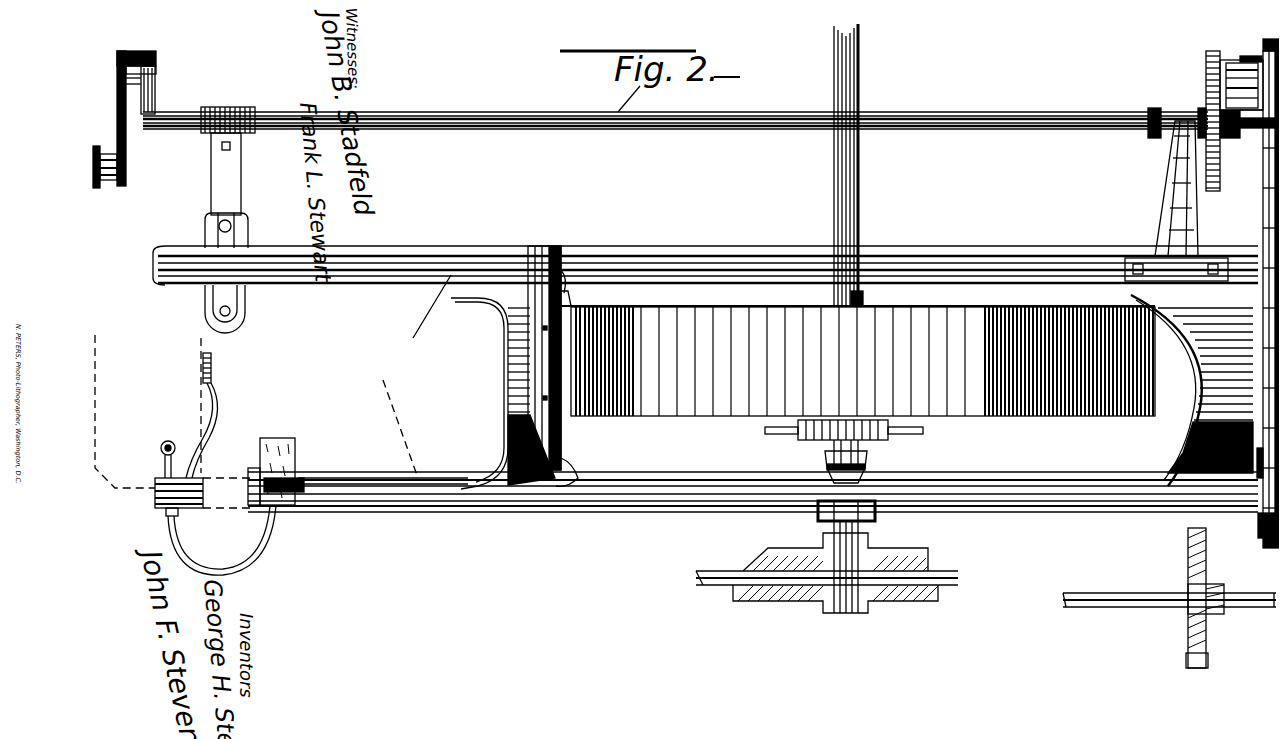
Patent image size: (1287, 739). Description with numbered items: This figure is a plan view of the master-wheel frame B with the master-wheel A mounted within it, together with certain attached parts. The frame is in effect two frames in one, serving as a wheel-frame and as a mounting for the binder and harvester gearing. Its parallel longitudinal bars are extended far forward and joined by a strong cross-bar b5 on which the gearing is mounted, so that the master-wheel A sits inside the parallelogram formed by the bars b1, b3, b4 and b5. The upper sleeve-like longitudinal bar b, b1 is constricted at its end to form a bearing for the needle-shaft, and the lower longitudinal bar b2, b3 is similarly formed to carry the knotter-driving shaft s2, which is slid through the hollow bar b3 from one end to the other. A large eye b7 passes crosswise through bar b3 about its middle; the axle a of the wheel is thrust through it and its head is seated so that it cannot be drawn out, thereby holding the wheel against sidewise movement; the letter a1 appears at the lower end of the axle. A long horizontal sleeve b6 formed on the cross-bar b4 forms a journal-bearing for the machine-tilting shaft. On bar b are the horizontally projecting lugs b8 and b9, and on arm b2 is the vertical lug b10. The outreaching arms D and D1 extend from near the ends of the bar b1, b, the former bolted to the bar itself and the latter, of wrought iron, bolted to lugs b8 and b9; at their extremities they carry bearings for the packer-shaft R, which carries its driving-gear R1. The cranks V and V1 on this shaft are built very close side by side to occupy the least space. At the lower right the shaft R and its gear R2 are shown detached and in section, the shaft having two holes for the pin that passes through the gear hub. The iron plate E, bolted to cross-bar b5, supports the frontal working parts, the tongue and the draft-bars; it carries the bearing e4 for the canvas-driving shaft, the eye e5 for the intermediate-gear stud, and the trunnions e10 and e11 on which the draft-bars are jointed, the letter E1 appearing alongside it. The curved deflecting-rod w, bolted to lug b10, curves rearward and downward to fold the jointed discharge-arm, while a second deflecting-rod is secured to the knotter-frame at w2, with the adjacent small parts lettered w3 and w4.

The packer-shaft R is at (709, 349).
The driving-gear R1 is at (1200, 112).
The flywheel / disk R' R2 is at (1200, 575).
The crank V is at (149, 118).
The crank V1 is at (118, 170).
The horizontally outreaching arm D is at (1168, 192).
The horizontally outreaching arm D1 is at (233, 160).
The master-wheel A is at (863, 361).
The axle a is at (851, 183).
The lower cylinder hub a' a1 is at (844, 451).
The master-wheel frame B is at (676, 364).
The sleeve-like longitudinal bar b is at (955, 531).
The longitudinal bar b1 is at (858, 259).
The longitudinal bar b2 is at (383, 514).
The longitudinal bar b3 is at (868, 540).
The cross-bar b4 is at (515, 357).
The cross-bar b5 is at (1192, 390).
The horizontal sleeve b6 is at (551, 428).
The eye b7 is at (812, 515).
The horizontally-projecting lug b8 is at (237, 309).
The horizontally-projecting lug b9 is at (245, 230).
The vertical lug b10 is at (280, 500).
The knotter-driving shaft s2 is at (700, 580).
The curved deflecting-rod w is at (222, 540).
The securing point w2 is at (156, 508).
The contact spring w3 is at (218, 367).
The wire w4 is at (208, 430).
The plate E is at (1256, 180).
The bar end block E1 is at (1250, 520).
The bearing e4 is at (1225, 103).
The eye e5 is at (1248, 50).
The trunnion e10 is at (1260, 30).
The trunnion e11 is at (1265, 554).